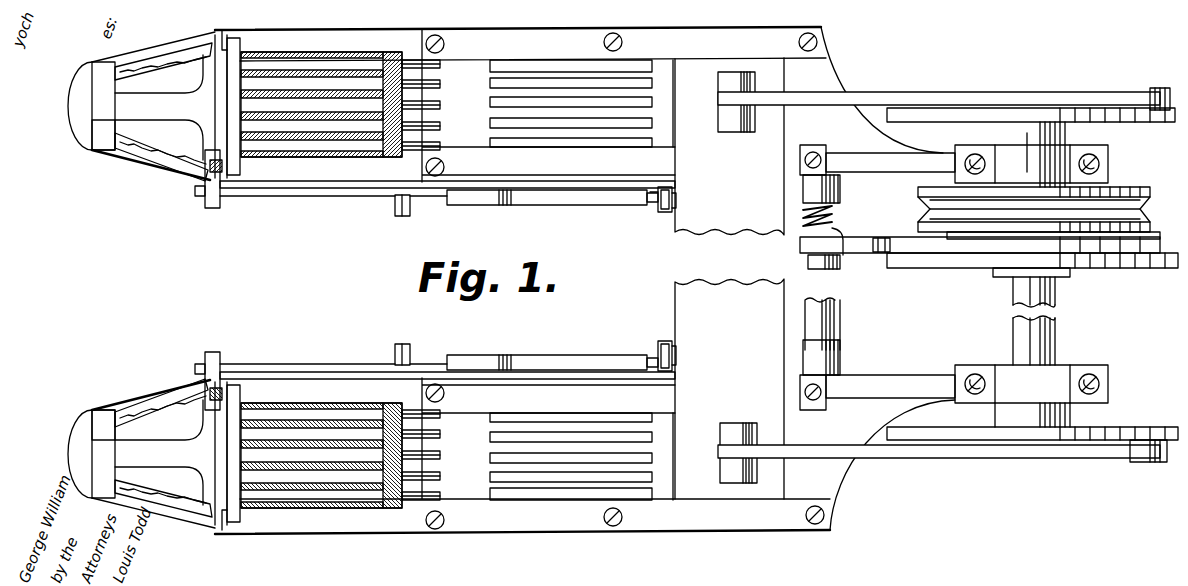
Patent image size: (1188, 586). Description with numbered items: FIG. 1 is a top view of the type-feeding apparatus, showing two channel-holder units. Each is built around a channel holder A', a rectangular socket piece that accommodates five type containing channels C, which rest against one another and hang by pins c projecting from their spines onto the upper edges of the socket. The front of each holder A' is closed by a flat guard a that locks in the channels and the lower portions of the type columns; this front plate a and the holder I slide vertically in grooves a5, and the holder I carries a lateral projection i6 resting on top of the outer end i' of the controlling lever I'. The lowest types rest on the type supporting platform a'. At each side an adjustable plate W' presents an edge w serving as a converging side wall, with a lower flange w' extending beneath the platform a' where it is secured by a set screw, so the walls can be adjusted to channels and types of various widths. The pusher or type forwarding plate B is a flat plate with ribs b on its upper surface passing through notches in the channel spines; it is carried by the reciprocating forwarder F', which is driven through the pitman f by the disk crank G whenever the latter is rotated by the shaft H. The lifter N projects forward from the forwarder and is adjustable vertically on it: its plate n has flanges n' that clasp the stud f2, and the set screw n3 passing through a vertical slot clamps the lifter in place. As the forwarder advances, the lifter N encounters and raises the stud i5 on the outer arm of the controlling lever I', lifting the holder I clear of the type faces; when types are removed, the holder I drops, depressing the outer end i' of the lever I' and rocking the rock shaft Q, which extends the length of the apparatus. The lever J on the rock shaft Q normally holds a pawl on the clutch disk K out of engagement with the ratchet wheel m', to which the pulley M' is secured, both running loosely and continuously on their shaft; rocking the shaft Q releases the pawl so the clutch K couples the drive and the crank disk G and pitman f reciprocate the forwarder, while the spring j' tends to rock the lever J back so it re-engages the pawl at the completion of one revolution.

The holder I is at (135, 280).
The outer end of controlling lever i' is at (103, 309).
The type supporting platform a' is at (153, 280).
The edge of plate w is at (163, 263).
The flange w' is at (161, 280).
The flat guard a is at (220, 280).
The grooves a5 is at (234, 42).
The wedge block W' is at (198, 280).
The lateral projection i6 is at (215, 280).
The channel holder A' is at (522, 280).
The type containing channels C is at (358, 58).
The pins c is at (425, 280).
The pusher plate B is at (564, 280).
The ribs b is at (555, 98).
The controlling lever I' is at (447, 280).
The stud i5 is at (390, 280).
The lifter N is at (547, 280).
The set screw n3 is at (650, 203).
The plate n is at (666, 278).
The flanges n' is at (667, 279).
The stud f2 is at (654, 195).
The cross head F' is at (729, 278).
The pitman f is at (944, 277).
The disk crank G is at (877, 269).
The shaft H is at (1031, 274).
The pulley M' is at (1026, 213).
The ratchet wheel m' is at (1035, 218).
The spring j' is at (827, 275).
The lever J is at (980, 240).
The rock shaft Q is at (826, 302).
The clutch disk K is at (886, 282).